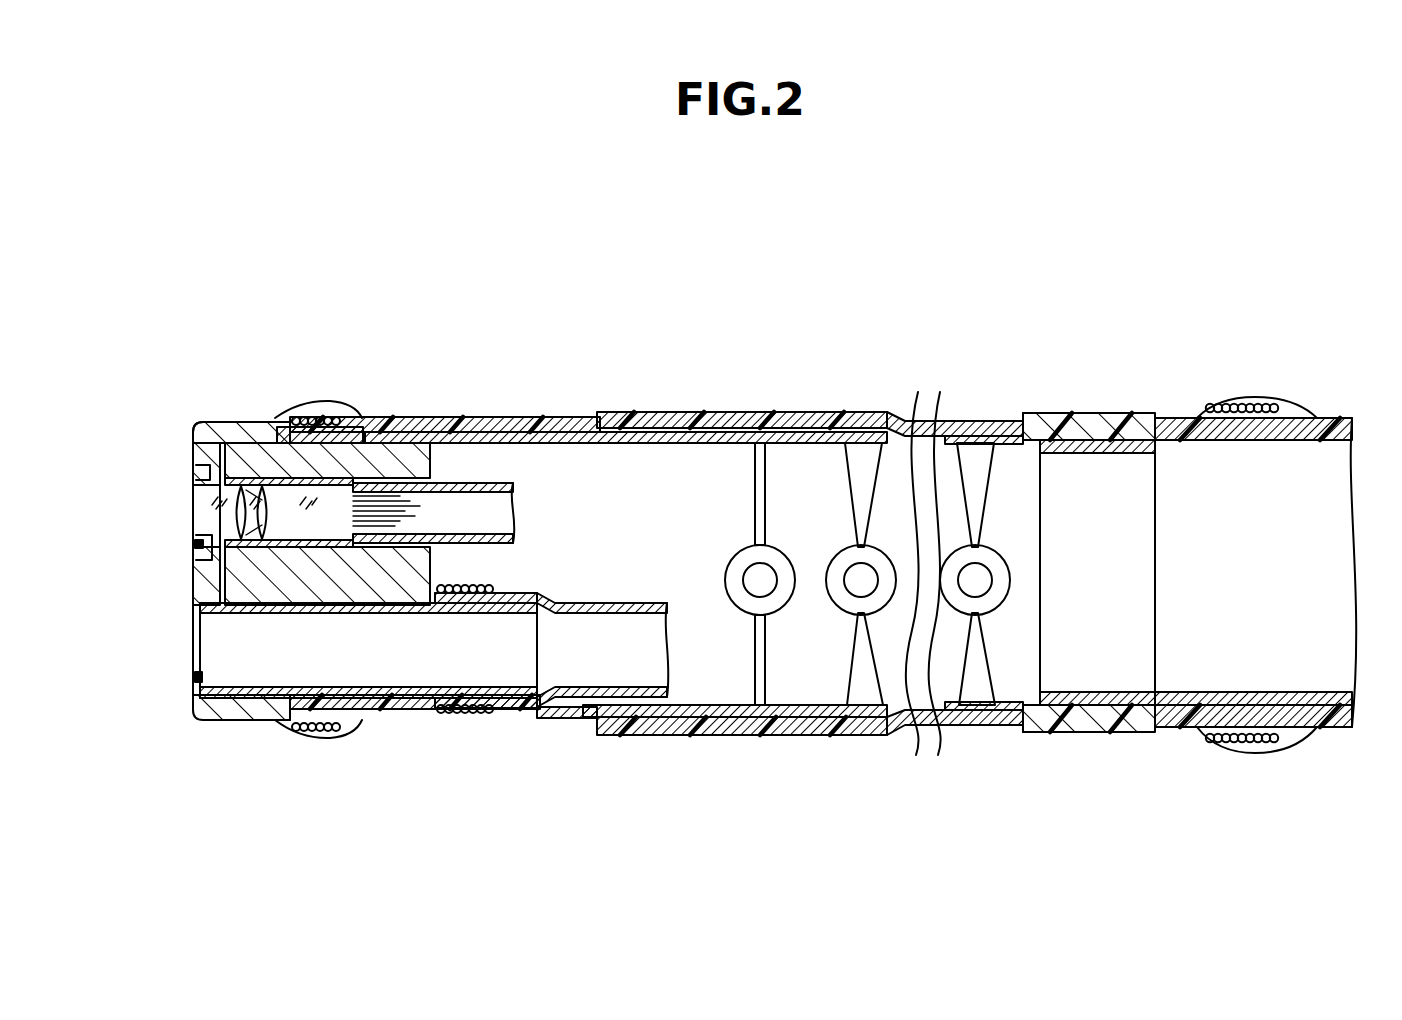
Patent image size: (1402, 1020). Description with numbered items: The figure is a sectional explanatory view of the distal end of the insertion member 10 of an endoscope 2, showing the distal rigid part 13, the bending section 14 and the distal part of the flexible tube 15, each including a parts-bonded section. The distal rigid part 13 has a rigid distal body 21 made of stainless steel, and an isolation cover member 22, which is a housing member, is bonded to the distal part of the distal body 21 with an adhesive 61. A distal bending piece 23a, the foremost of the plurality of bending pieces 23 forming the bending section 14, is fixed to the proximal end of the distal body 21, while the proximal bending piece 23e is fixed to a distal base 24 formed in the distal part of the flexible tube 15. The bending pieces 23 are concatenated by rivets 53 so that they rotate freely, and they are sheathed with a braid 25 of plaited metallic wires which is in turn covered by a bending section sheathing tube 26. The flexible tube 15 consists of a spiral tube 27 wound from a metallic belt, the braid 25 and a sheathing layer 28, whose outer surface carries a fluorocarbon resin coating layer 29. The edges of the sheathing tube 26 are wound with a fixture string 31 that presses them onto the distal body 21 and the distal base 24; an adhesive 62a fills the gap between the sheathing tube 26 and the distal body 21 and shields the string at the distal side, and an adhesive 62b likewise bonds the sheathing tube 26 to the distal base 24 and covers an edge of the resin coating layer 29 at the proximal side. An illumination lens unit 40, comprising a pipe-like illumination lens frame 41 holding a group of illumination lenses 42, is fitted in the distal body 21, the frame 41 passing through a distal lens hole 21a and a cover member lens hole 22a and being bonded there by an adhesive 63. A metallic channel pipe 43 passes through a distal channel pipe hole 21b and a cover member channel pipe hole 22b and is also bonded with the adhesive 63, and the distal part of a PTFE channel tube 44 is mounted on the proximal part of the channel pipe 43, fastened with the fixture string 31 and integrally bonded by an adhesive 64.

The endoscope 2 is at (1140, 258).
The insertion member 10 is at (798, 305).
The distal rigid part 13 is at (282, 364).
The bending section 14 is at (961, 378).
The flexible tube 15 is at (1346, 374).
The distal body 21 is at (420, 418).
The distal lens hole 21a is at (284, 548).
The distal channel pipe hole 21b is at (395, 665).
The isolation cover member 22 is at (250, 420).
The cover member lens hole 22a is at (196, 537).
The cover member channel pipe hole 22b is at (190, 668).
The bending pieces 23 is at (960, 443).
The distal bending piece 23a is at (568, 430).
The proximal bending piece 23e is at (1074, 430).
The distal base 24 is at (1165, 416).
The braid 25 is at (1248, 700).
The bending section sheathing tube 26 is at (652, 414).
The spiral tube 27 is at (1186, 694).
The sheathing layer 28 is at (1316, 732).
The resin coating layer 29 is at (1336, 736).
The fixture string 31 is at (318, 735).
The illumination lens unit 40 is at (196, 470).
The illumination lens frame 41 is at (312, 418).
The illumination lenses 42 is at (240, 499).
The channel pipe 43 is at (431, 710).
The channel tube 44 is at (526, 710).
The rivets 53 is at (760, 582).
The adhesive 61 is at (216, 420).
The adhesive 62a is at (340, 416).
The adhesive 62b is at (1276, 412).
The adhesive 63 is at (196, 548).
The adhesive 64 is at (523, 735).